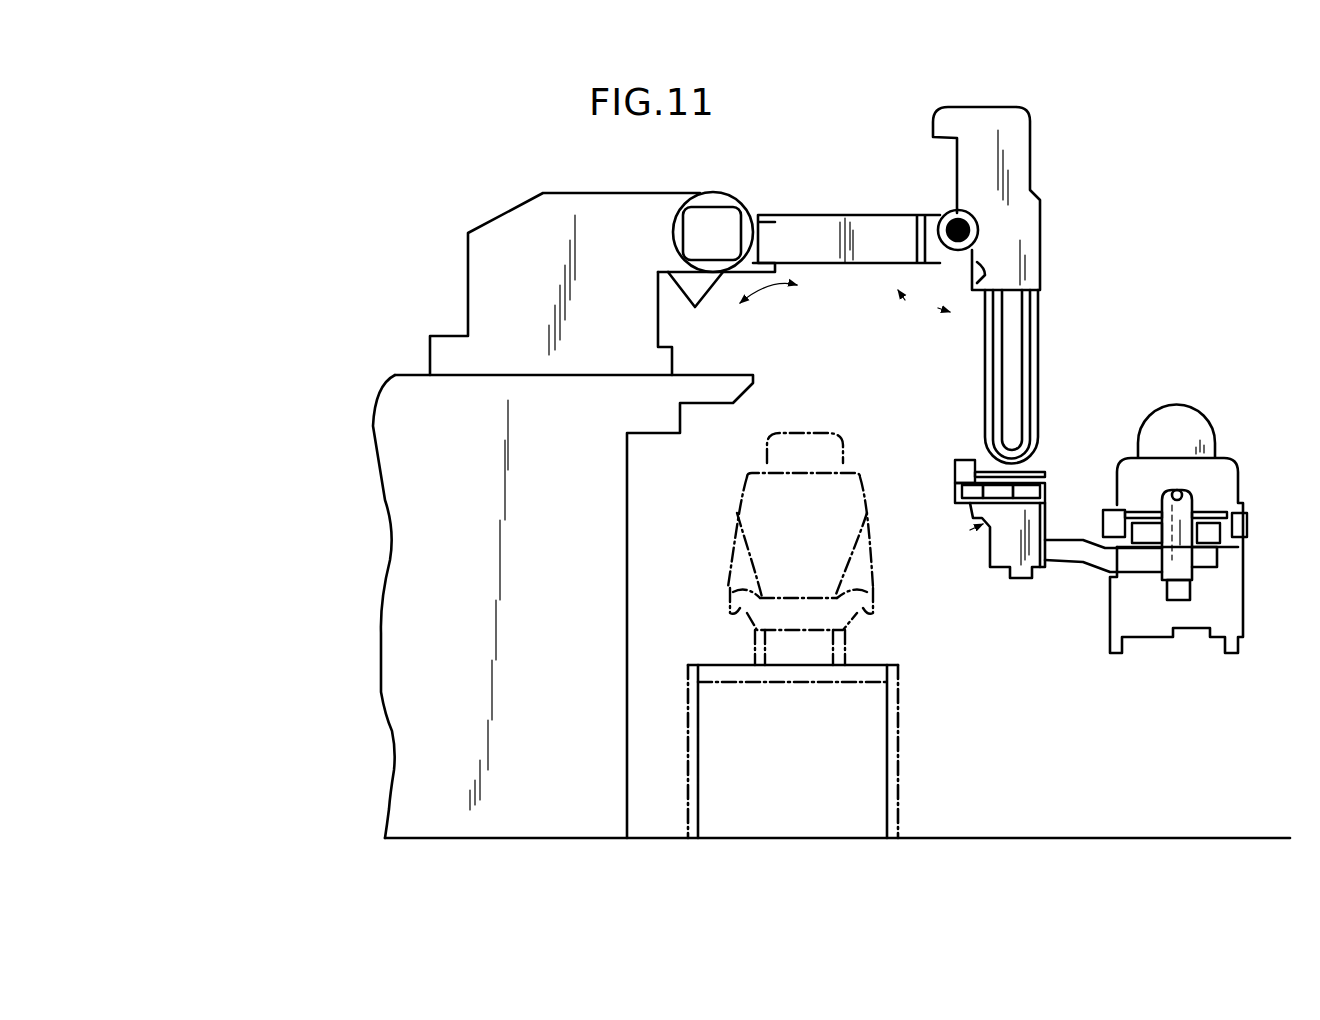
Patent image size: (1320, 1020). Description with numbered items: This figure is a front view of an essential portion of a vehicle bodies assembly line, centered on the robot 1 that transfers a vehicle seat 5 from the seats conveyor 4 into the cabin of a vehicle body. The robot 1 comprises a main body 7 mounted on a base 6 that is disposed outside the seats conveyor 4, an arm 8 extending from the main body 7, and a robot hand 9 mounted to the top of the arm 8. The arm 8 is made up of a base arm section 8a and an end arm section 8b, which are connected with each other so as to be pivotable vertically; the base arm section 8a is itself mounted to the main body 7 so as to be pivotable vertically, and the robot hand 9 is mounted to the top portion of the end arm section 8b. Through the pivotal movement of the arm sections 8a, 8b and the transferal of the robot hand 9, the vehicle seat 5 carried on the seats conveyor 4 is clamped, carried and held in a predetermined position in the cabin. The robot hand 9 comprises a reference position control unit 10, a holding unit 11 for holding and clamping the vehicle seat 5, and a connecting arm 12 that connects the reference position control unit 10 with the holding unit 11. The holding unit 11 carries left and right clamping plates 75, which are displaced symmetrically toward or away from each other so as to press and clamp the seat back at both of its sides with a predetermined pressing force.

The robot 1 is at (492, 190).
The seats conveyor 4 is at (833, 677).
The vehicle seat 5 is at (840, 497).
The base 6 is at (412, 780).
The main body 7 is at (507, 263).
The arm 8 is at (1045, 235).
The base arm section 8a is at (808, 247).
The end arm section 8b is at (1028, 350).
The robot hand 9 is at (1057, 503).
The reference position control unit 10 is at (1007, 542).
The holding unit 11 is at (1197, 580).
The connecting arm 12 is at (1078, 553).
The clamping plate 75 is at (1103, 518).